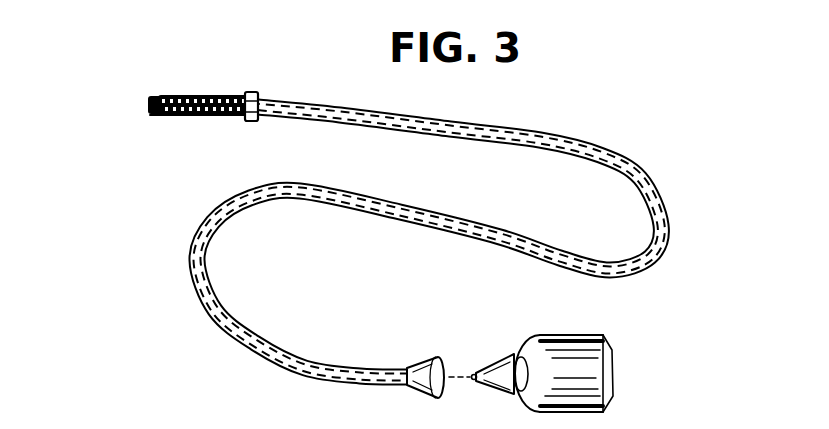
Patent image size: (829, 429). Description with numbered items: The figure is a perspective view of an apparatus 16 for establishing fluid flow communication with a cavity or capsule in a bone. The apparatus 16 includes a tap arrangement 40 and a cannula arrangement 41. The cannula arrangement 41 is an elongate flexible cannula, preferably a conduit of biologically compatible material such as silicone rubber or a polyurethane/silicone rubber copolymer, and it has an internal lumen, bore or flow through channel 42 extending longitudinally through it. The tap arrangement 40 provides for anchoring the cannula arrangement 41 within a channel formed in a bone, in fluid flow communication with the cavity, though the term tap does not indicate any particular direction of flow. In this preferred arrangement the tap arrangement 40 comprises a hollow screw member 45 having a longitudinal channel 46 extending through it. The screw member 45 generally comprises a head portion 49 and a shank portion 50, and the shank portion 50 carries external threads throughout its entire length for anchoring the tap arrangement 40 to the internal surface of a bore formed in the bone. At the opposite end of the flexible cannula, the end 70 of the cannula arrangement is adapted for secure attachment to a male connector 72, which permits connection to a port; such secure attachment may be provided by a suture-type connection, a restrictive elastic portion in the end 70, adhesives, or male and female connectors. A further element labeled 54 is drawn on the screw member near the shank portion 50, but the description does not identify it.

The apparatus 16 is at (670, 161).
The tap arrangement 40 is at (215, 90).
The cannula arrangement 41 is at (671, 232).
The flow through channel 42 is at (571, 140).
The hollow screw member 45 is at (176, 117).
The longitudinal channel 46 is at (147, 106).
The head portion 49 is at (250, 94).
The shank portion 50 is at (170, 99).
The connector shoulder 54 is at (228, 118).
The end 70 is at (423, 366).
The male connector 72 is at (493, 362).